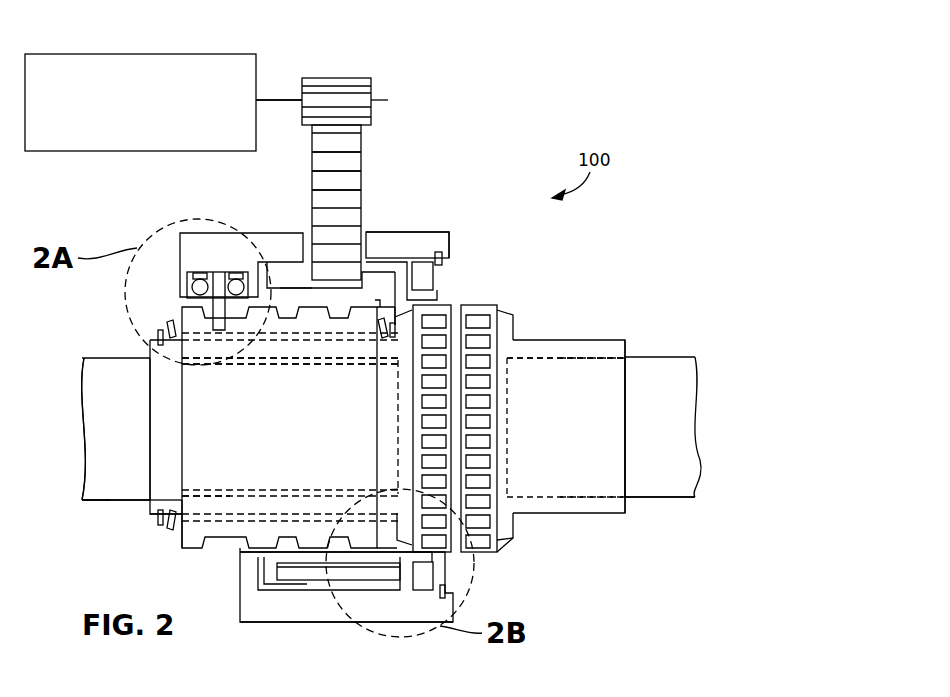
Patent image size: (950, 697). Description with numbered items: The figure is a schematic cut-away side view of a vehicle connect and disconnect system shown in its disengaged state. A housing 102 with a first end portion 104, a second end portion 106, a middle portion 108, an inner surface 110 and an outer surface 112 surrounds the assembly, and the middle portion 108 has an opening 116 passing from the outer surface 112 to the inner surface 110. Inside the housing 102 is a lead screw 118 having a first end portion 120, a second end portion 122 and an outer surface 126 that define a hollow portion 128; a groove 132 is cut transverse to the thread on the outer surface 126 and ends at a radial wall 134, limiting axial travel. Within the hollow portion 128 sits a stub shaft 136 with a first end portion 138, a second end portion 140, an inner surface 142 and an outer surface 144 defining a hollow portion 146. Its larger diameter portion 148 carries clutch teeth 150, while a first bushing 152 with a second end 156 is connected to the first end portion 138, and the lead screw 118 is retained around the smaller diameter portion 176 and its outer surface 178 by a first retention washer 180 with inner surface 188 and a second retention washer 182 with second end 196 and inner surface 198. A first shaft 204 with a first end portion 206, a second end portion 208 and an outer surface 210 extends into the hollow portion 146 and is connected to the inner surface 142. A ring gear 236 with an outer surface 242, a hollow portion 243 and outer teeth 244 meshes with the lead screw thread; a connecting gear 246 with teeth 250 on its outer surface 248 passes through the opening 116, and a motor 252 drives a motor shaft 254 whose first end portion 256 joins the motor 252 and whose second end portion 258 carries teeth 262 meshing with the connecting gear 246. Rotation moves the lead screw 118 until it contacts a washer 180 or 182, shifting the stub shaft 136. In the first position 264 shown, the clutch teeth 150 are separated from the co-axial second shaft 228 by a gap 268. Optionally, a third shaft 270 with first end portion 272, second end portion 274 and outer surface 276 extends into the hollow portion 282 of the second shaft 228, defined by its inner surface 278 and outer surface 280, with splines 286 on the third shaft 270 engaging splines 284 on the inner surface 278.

The housing 102 is at (450, 240).
The first end portion 104 is at (440, 232).
The second end portion 106 is at (192, 233).
The middle portion 108 is at (264, 233).
The inner surface 110 is at (240, 580).
The outer surface 112 is at (258, 622).
The opening 116 is at (360, 226).
The lead screw 118 is at (182, 376).
The first end portion 120 is at (187, 550).
The second end portion 122 is at (352, 535).
The outer surface 126 is at (212, 560).
The hollow portion 128 is at (192, 392).
The groove 132 is at (262, 330).
The radial wall 134 is at (280, 330).
The stub shaft 136 is at (150, 510).
The first end portion 138 is at (182, 540).
The second end portion 140 is at (470, 310).
The inner surface 142 is at (272, 500).
The outer surface 144 is at (158, 517).
The hollow portion 146 is at (163, 420).
The larger diameter portion 148 is at (437, 302).
The clutch teeth 150 is at (450, 553).
The first bushing 152 is at (158, 517).
The second end 156 is at (184, 512).
The smaller diameter portion 176 is at (242, 556).
The outer surface 178 is at (237, 512).
The first retention washer 180 is at (170, 530).
The second retention washer 182 is at (388, 330).
The inner surface 188 is at (216, 500).
The second end 196 is at (398, 290).
The inner surface 198 is at (390, 308).
The first shaft 204 is at (82, 430).
The first end portion 206 is at (82, 498).
The second end portion 208 is at (292, 500).
The outer surface 210 is at (110, 500).
The second shaft 228 is at (622, 340).
The ring gear 236 is at (340, 580).
The outer surface 242 is at (378, 580).
The hollow portion 243 is at (376, 305).
The teeth 244 is at (316, 580).
The connecting gear 246 is at (360, 154).
The outer surface 248 is at (360, 181).
The teeth 250 is at (356, 133).
The motor 252 is at (82, 54).
The motor shaft 254 is at (280, 100).
The first end portion 256 is at (264, 100).
The second end portion 258 is at (380, 100).
The teeth 262 is at (334, 82).
The first position 264 is at (515, 560).
The gap 268 is at (478, 306).
The third shaft 270 is at (700, 374).
The first end portion 272 is at (523, 497).
The second end portion 274 is at (678, 498).
The outer surface 276 is at (655, 357).
The inner surface 278 is at (528, 358).
The outer surface 280 is at (558, 340).
The hollow portion 282 is at (615, 412).
The splines 284 is at (594, 358).
The splines 286 is at (592, 497).